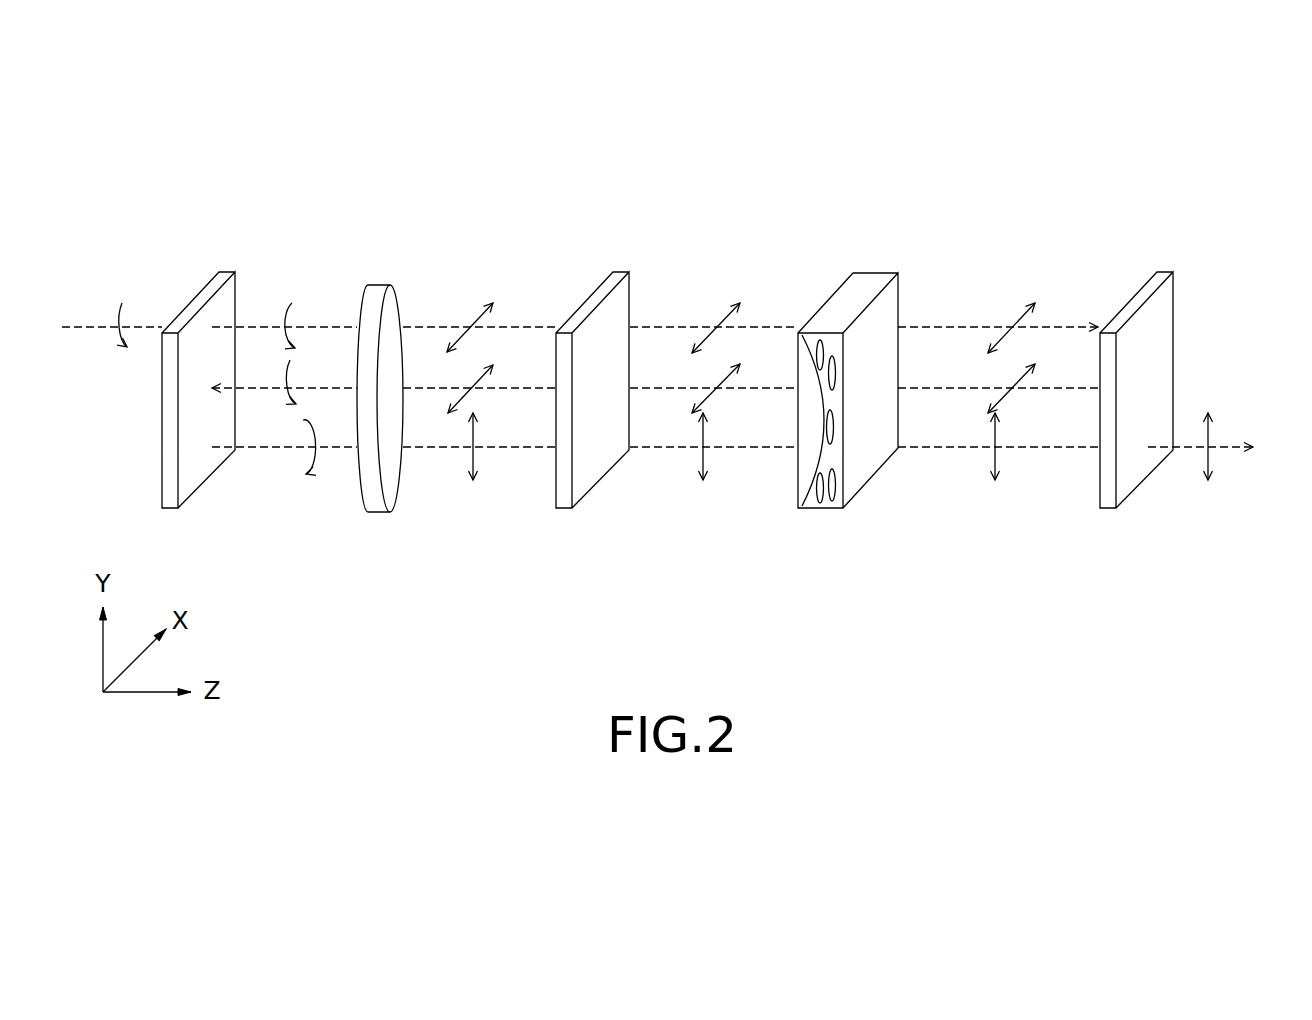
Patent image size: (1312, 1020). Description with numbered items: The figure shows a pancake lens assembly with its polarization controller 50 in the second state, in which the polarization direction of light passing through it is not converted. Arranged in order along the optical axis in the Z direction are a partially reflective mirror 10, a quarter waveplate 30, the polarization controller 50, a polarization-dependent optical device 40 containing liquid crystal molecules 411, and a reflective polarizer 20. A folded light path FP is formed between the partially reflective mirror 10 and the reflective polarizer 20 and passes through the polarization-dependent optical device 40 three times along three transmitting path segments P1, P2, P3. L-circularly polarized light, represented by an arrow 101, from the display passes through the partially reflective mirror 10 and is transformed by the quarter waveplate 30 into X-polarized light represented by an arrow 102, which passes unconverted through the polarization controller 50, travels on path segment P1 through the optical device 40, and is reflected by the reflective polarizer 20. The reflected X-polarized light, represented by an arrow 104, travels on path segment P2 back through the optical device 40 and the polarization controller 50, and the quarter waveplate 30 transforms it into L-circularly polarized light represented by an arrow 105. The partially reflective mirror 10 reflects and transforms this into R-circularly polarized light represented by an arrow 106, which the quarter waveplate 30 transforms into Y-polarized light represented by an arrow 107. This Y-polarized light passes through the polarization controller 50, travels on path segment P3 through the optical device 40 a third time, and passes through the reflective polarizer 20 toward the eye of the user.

The partially reflective mirror 10 is at (207, 273).
The reflective polarizer 20 is at (1145, 271).
The quarter waveplate 30 is at (377, 275).
The polarization-dependent optical device 40 is at (857, 371).
The liquid crystal molecules 411 is at (836, 487).
The polarization controller 50 is at (600, 273).
The arrow representing L-circularly polarized light 101 is at (122, 305).
The arrow representing X-polarized light 102 is at (467, 323).
The arrow representing reflected X-polarized light 104 is at (478, 388).
The arrow representing L-circularly polarized light 105 is at (276, 380).
The arrow representing R-circularly polarized light 106 is at (308, 476).
The arrow representing Y-polarized light 107 is at (476, 450).
The folded light path FP is at (338, 276).
The first transmitting path segment P1 is at (779, 322).
The second transmitting path segment P2 is at (921, 382).
The third transmitting path segment P3 is at (771, 453).